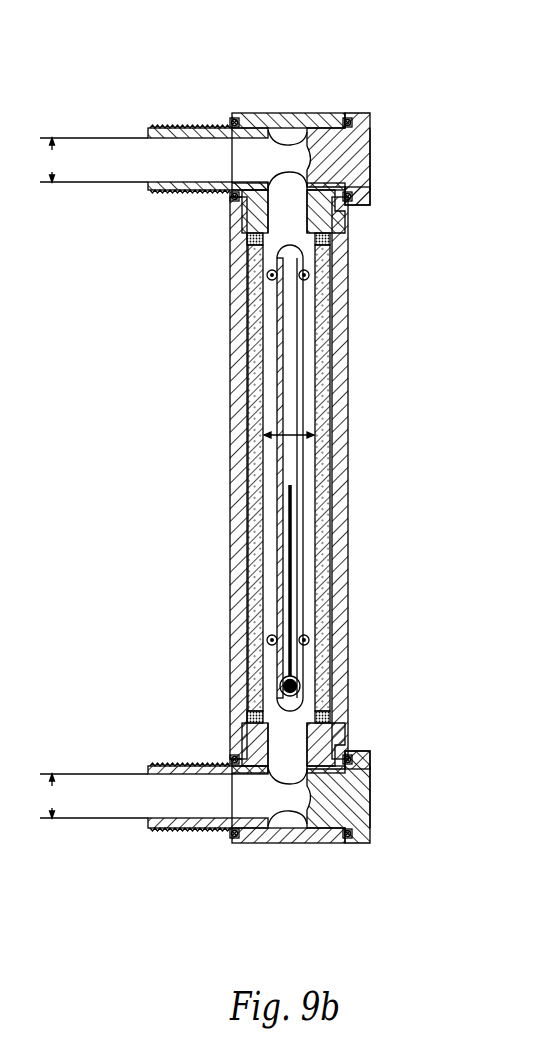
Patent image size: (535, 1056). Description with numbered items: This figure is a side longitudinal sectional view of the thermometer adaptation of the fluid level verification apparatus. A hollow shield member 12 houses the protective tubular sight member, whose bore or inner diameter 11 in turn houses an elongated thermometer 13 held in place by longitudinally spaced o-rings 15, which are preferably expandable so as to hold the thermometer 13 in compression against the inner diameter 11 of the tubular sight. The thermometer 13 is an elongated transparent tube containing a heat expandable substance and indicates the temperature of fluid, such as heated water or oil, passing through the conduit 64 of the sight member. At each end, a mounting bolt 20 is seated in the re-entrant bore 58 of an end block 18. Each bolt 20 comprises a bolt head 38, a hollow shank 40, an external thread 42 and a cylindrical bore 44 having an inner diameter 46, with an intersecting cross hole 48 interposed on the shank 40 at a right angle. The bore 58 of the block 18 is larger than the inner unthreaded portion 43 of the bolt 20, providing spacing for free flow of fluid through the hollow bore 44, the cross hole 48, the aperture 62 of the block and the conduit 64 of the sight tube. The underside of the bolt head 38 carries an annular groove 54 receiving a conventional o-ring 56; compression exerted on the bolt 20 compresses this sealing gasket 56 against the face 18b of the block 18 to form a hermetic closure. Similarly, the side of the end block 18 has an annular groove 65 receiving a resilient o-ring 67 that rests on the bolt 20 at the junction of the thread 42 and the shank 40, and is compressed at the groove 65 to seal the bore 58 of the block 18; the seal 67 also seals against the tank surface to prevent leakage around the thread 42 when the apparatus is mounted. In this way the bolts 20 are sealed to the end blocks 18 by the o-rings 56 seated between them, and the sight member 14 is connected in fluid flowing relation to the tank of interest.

The inner diameter 11 is at (292, 433).
The hollow shield member 12 is at (235, 412).
The thermometer 13 is at (287, 468).
The inner tube 14 is at (340, 252).
The o-rings 15 is at (266, 278).
The end block 18 is at (285, 130).
The face 18b is at (360, 116).
The mounting bolt 20 is at (350, 150).
The bolt head 38 is at (372, 145).
The hollow shank 40 is at (232, 196).
The external thread 42 is at (165, 128).
The inner unthreaded portion 43 is at (230, 123).
The cylindrical bore 44 is at (180, 158).
The inner diameter 46 is at (94, 478).
The cross hole 48 is at (317, 128).
The annular groove 54 is at (335, 118).
The o-ring 56 is at (352, 122).
The re-entrant bore 58 is at (248, 113).
The aperture 62 is at (310, 298).
The conduit 64 is at (270, 565).
The annular groove 65 is at (228, 124).
The o-ring 67 is at (185, 128).